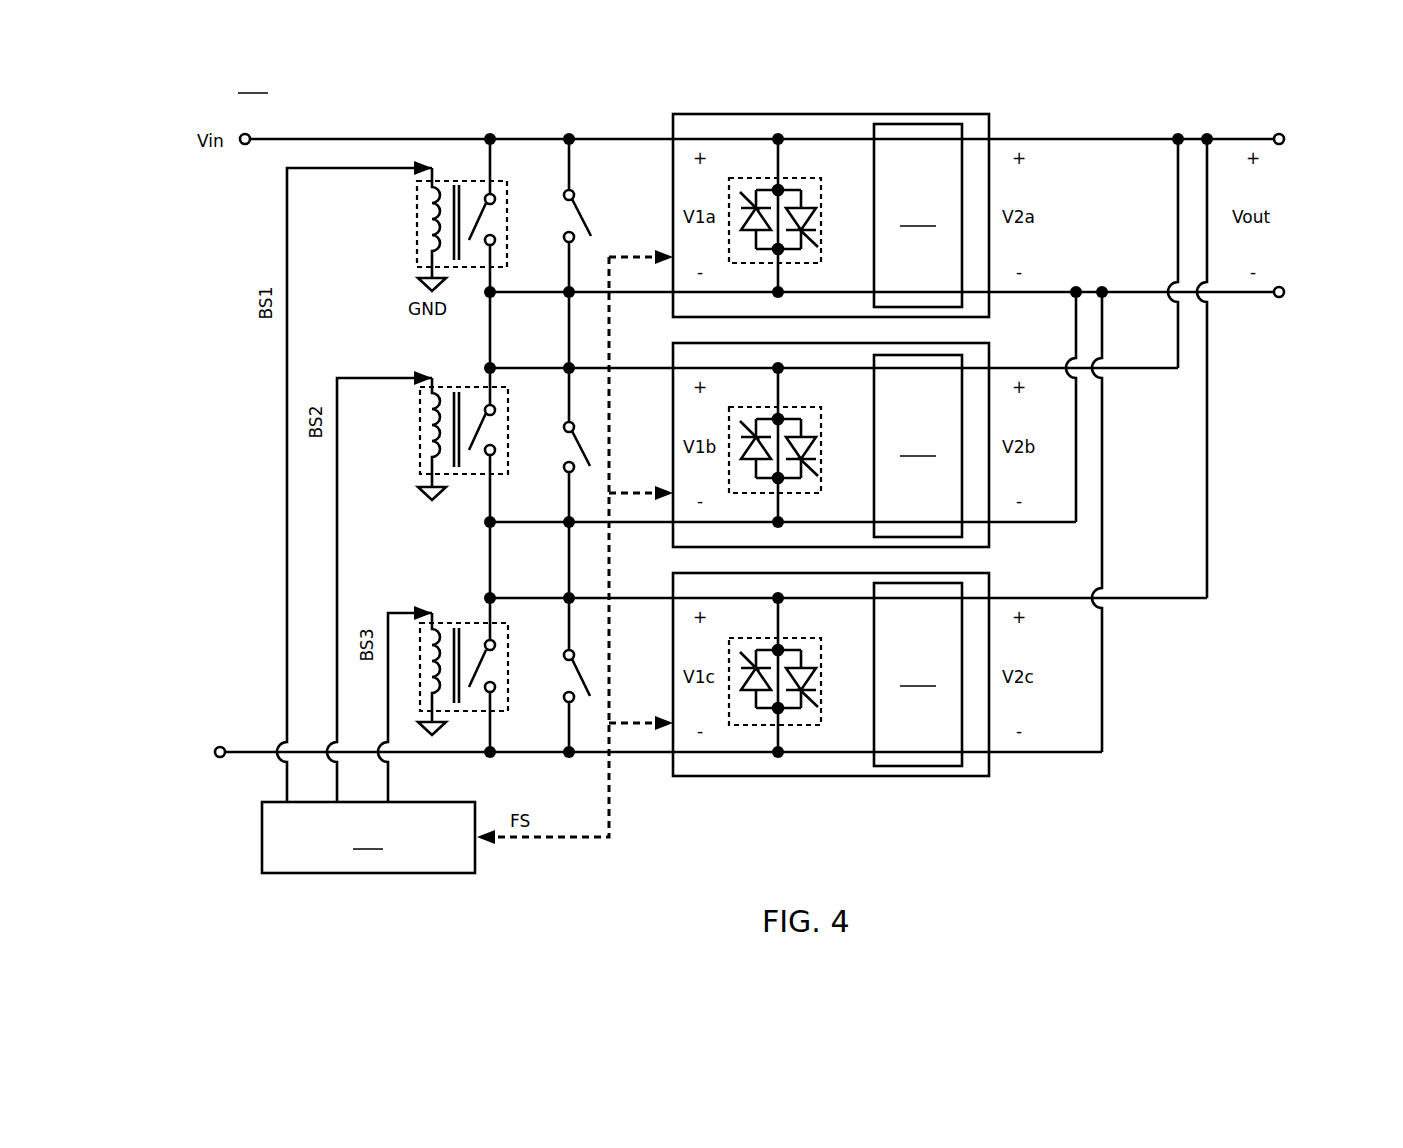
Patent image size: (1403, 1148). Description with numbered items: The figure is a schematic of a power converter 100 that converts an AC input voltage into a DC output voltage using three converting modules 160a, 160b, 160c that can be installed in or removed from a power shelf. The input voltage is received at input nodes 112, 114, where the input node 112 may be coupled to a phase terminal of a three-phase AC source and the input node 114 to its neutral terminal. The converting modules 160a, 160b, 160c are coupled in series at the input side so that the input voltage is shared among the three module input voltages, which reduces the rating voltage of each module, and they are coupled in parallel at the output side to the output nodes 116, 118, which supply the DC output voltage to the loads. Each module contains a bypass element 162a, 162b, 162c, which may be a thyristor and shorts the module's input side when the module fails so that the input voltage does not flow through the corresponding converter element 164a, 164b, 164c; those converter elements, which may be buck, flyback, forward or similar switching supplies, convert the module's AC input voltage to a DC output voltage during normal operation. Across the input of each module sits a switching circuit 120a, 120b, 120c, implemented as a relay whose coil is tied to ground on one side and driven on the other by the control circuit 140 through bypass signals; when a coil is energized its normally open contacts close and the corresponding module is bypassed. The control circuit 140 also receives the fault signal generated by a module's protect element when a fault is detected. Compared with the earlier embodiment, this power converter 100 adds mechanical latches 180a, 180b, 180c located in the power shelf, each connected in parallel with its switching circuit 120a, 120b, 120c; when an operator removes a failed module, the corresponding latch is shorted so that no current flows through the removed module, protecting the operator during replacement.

The power converter 100 is at (254, 84).
The input node 112 is at (243, 145).
The input node 114 is at (218, 746).
The output node 116 is at (1285, 141).
The output node 118 is at (1285, 294).
The switching circuit 120a is at (418, 193).
The switching circuit 120b is at (456, 387).
The switching circuit 120c is at (458, 623).
The control circuit 140 is at (368, 837).
The converting module 160a is at (989, 124).
The converting module 160b is at (989, 541).
The converting module 160c is at (965, 777).
The bypass element 162a is at (820, 247).
The bypass element 162b is at (820, 478).
The bypass element 162c is at (820, 712).
The converter element 164a is at (918, 215).
The converter element 164b is at (918, 446).
The converter element 164c is at (918, 674).
The mechanical latch 180a is at (580, 212).
The mechanical latch 180b is at (578, 434).
The mechanical latch 180c is at (580, 665).